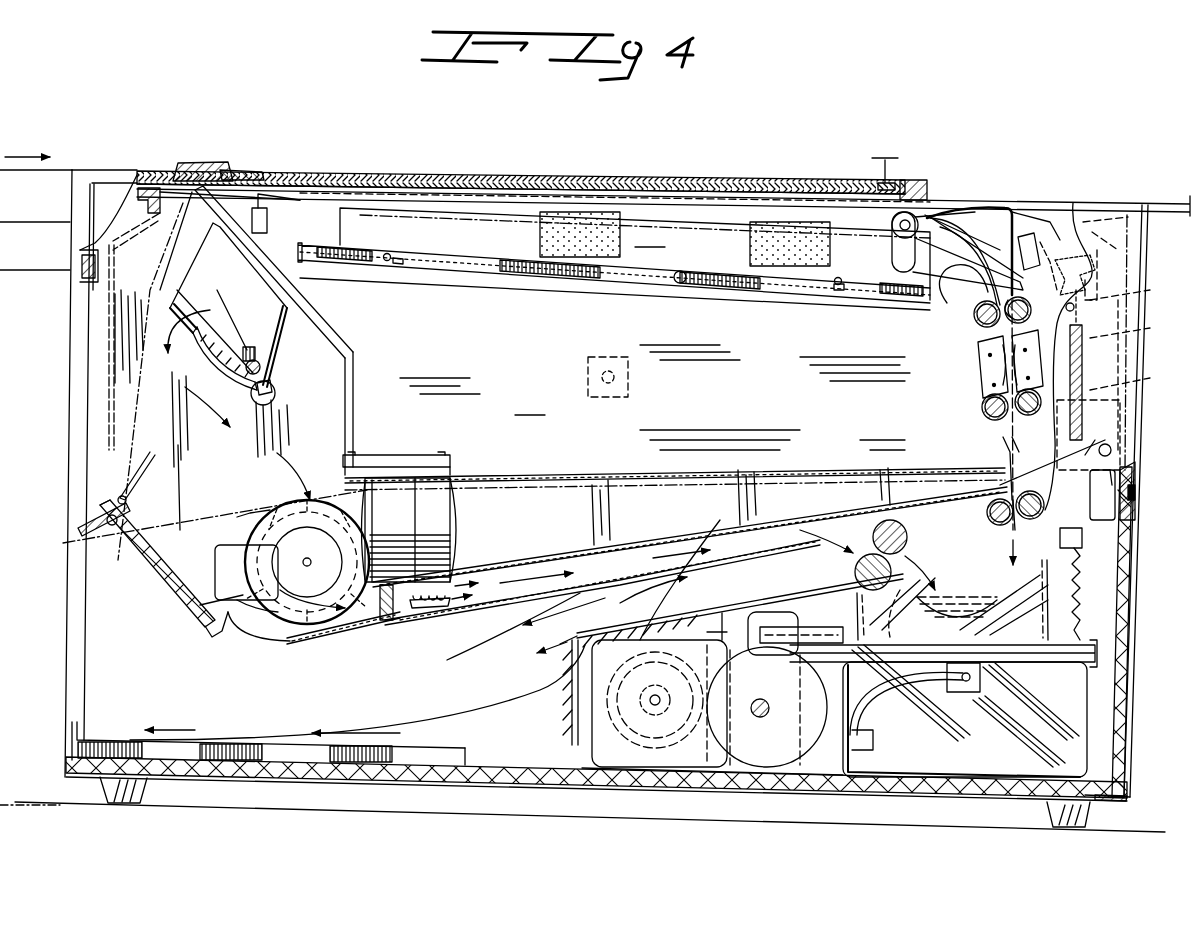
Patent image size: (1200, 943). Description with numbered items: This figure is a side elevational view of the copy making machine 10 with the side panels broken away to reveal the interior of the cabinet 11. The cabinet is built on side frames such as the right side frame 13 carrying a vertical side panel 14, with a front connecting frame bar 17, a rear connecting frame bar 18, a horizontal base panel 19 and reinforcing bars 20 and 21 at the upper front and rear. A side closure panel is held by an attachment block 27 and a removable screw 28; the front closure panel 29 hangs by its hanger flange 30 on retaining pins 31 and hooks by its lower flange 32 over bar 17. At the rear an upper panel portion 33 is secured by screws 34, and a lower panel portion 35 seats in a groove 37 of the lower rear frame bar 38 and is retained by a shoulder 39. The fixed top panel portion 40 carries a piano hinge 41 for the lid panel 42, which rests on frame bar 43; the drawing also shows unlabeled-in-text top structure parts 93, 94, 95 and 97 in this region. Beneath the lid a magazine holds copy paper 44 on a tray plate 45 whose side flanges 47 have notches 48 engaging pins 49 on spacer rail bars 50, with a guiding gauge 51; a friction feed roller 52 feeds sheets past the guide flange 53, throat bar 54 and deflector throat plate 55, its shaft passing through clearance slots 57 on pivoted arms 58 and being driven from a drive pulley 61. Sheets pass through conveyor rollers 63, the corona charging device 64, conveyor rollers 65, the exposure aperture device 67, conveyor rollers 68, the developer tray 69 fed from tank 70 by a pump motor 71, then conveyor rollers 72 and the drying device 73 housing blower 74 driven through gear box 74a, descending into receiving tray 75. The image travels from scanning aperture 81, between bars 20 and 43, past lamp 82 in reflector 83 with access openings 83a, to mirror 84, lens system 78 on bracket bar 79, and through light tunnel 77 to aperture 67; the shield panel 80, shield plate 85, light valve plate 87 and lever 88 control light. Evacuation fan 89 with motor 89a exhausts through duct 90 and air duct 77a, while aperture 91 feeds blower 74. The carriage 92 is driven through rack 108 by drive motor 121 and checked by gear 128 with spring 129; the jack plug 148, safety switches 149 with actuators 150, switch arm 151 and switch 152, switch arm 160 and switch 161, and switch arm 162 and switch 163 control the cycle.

The copy making machine 10 is at (1133, 200).
The cabinet 11 is at (1150, 200).
The right side frame 13 is at (582, 817).
The vertical side panel 14 is at (530, 405).
The connecting frame bar 17 is at (205, 626).
The connecting frame bar 18 is at (1115, 515).
The horizontal base panel 19 is at (517, 777).
The bar 20 is at (149, 188).
The bar 21 is at (1003, 208).
The attachment block 27 is at (585, 358).
The removable screw 28 is at (595, 374).
The upper removable closure panel 29 is at (72, 398).
The hanger flange 30 is at (83, 272).
The retaining pins 31 is at (87, 260).
The lower marginal hook flange 32 is at (75, 541).
The upper panel portion 33 is at (1133, 468).
The screws 34 is at (1130, 500).
The lower panel portion 35 is at (1124, 634).
The groove 37 is at (1127, 780).
The lower rear transverse frame bar 38 is at (1127, 798).
The shoulder 39 is at (1135, 492).
The top panel portion 40 is at (1020, 210).
The piano hinge 41 is at (950, 214).
The lid panel 42 is at (497, 210).
The frame bar 43 is at (230, 178).
The copy paper 44 is at (898, 232).
The tray plate 45 is at (472, 238).
The side flanges 47 is at (460, 264).
The notches 48 is at (398, 265).
The pins 49 is at (384, 260).
The spacer rail bars 50 is at (693, 290).
The paper guiding gauge 51 is at (685, 239).
The friction feed roller 52 is at (912, 213).
The rear end guide flange 53 is at (960, 300).
The throat bar 54 is at (982, 278).
The deflector throat plate 55 is at (1003, 240).
The clearance slots 57 is at (892, 258).
The arms 58 is at (975, 222).
The drive pulley 61 is at (1092, 215).
The conveyor rollers 63 is at (975, 318).
The corona charging device 64 is at (980, 360).
The conveyor rollers 65 is at (983, 405).
The exposure aperture device 67 is at (1000, 460).
The conveyor rollers 68 is at (988, 515).
The developer tray 69 is at (1045, 610).
The tank 70 is at (1037, 693).
The pump motor 71 is at (803, 633).
The conveyor rollers 72 is at (903, 563).
The air drying and sheet advancing device 73 is at (640, 612).
The centrifugal impeller blower 74 is at (625, 675).
The gear box 74a is at (597, 742).
The receiving tray 75 is at (217, 758).
The light tunnel 77 is at (593, 472).
The air duct 77a is at (503, 603).
The lens system 78 is at (432, 508).
The reinforcing bracket bar 79 is at (420, 456).
The light shield panel 80 is at (345, 350).
The scanning aperture 81 is at (172, 197).
The lamp 82 is at (257, 362).
The parabolic reflector 83 is at (272, 370).
The lamp access openings 83a is at (283, 306).
The mirror 84 is at (137, 556).
The shield plate 85 is at (110, 352).
The light valve plate 87 is at (145, 467).
The lever 88 is at (78, 525).
The centrifugal evacuation fan 89 is at (293, 523).
The fan drive motor 89a is at (260, 613).
The transverse air duct 90 is at (263, 515).
The aperture 91 is at (573, 730).
The carriage 92 is at (933, 205).
The belt 93 is at (425, 175).
The belt 94 is at (590, 178).
The block 95 is at (205, 163).
The post 97 is at (892, 158).
The double-sided rack 108 is at (1091, 342).
The drive motor 121 is at (762, 690).
The segmental check gear 128 is at (1150, 290).
The over-center tension spring 129 is at (1150, 328).
The jack plug 148 is at (1082, 538).
The safety switches 149 is at (262, 225).
The switch actuators 150 is at (267, 200).
The switch arm 151 is at (1015, 302).
The double acting switch 152 is at (1036, 268).
The switch arm 160 is at (1082, 370).
The switch 161 is at (1150, 378).
The switch arm 162 is at (1040, 472).
The two-way switch 163 is at (1078, 422).